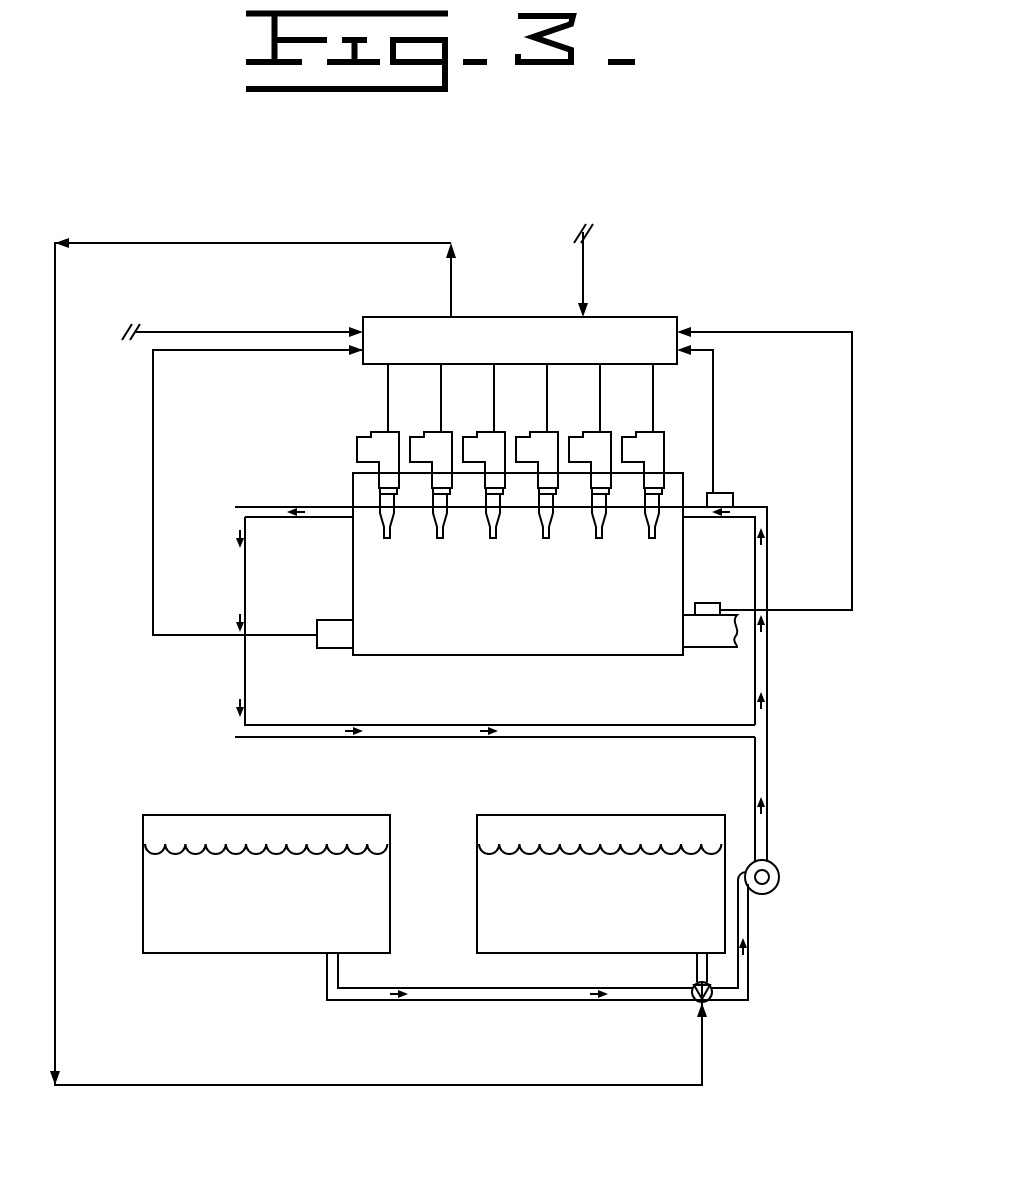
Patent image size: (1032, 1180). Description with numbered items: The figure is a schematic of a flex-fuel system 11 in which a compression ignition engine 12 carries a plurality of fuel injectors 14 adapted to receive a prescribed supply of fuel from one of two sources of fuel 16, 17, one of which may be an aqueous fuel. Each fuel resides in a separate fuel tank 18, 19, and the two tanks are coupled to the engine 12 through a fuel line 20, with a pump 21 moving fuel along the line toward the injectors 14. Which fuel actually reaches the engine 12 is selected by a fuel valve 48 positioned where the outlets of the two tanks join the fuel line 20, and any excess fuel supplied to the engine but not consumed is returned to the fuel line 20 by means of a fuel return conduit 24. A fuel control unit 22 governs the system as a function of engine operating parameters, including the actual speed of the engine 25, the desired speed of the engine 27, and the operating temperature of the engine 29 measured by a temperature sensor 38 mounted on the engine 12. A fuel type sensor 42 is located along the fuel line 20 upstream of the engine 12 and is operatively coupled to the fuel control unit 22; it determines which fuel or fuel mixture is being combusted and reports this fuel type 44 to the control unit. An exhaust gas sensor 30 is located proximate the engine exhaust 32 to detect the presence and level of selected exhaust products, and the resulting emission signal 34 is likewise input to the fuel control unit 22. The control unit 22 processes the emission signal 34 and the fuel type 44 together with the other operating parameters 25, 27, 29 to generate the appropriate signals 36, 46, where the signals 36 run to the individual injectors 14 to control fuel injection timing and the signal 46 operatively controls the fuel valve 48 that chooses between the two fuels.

The flex-fuel system 11 is at (154, 146).
The compression ignition engine 12 is at (493, 655).
The fuel injectors 14 is at (358, 460).
The fuel 16 is at (281, 896).
The fuel 17 is at (615, 896).
The fuel tank 18 is at (310, 815).
The fuel tank 19 is at (625, 815).
The fuel line 20 is at (767, 697).
The pump 21 is at (779, 884).
The fuel control unit 22 is at (543, 318).
The fuel return conduit 24 is at (390, 737).
The actual speed of the engine 25 is at (272, 332).
The desired speed of the engine 27 is at (583, 278).
The operating temperature of the engine 29 is at (208, 350).
The exhaust gas sensor 30 is at (700, 603).
The engine exhaust 32 is at (693, 648).
The emission signal 34 is at (852, 445).
The signals 36 is at (494, 402).
The temperature sensor 38 is at (330, 648).
The fuel type sensor 42 is at (728, 493).
The fuel type 44 is at (713, 430).
The signal 46 is at (404, 243).
The fuel valve 48 is at (712, 1000).